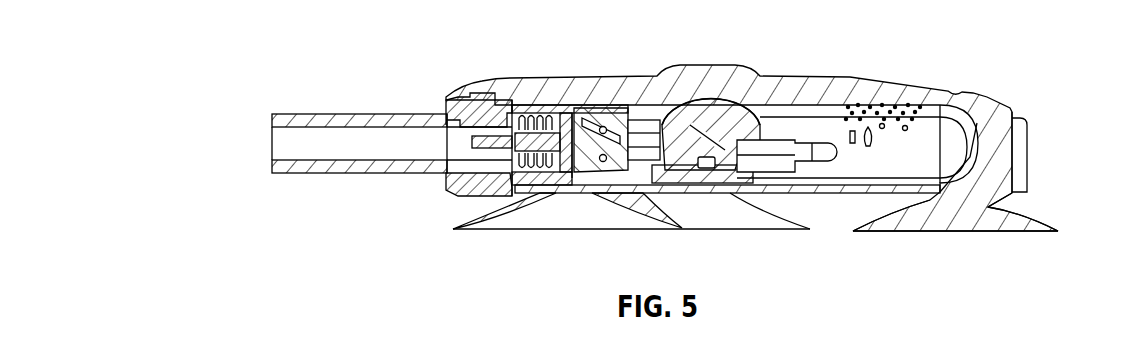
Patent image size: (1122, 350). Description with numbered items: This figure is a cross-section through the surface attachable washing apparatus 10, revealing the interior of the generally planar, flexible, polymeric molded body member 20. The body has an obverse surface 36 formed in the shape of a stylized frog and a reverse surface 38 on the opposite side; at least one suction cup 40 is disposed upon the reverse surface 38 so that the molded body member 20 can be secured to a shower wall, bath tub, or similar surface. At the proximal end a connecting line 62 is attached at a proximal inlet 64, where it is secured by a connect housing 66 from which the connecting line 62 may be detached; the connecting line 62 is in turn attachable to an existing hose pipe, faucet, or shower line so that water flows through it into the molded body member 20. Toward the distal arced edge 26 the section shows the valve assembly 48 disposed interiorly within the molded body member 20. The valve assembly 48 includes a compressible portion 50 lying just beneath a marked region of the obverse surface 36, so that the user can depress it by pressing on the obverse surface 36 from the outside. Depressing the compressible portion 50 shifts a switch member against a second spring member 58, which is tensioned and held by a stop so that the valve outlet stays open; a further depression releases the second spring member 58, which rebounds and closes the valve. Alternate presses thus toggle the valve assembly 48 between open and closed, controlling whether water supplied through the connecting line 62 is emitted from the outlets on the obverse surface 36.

The surface attachable washing apparatus 10 is at (934, 34).
The molded body member 20 is at (1003, 108).
The distal arced edge 26 is at (1020, 150).
The obverse surface 36 is at (790, 76).
The reverse surface 38 is at (818, 196).
The suction cup 40 is at (968, 233).
The valve assembly 48 is at (570, 176).
The compressible portion 50 is at (713, 105).
The second spring member 58 is at (562, 122).
The connecting line 62 is at (353, 175).
The proximal inlet 64 is at (437, 143).
The connect housing 66 is at (448, 188).